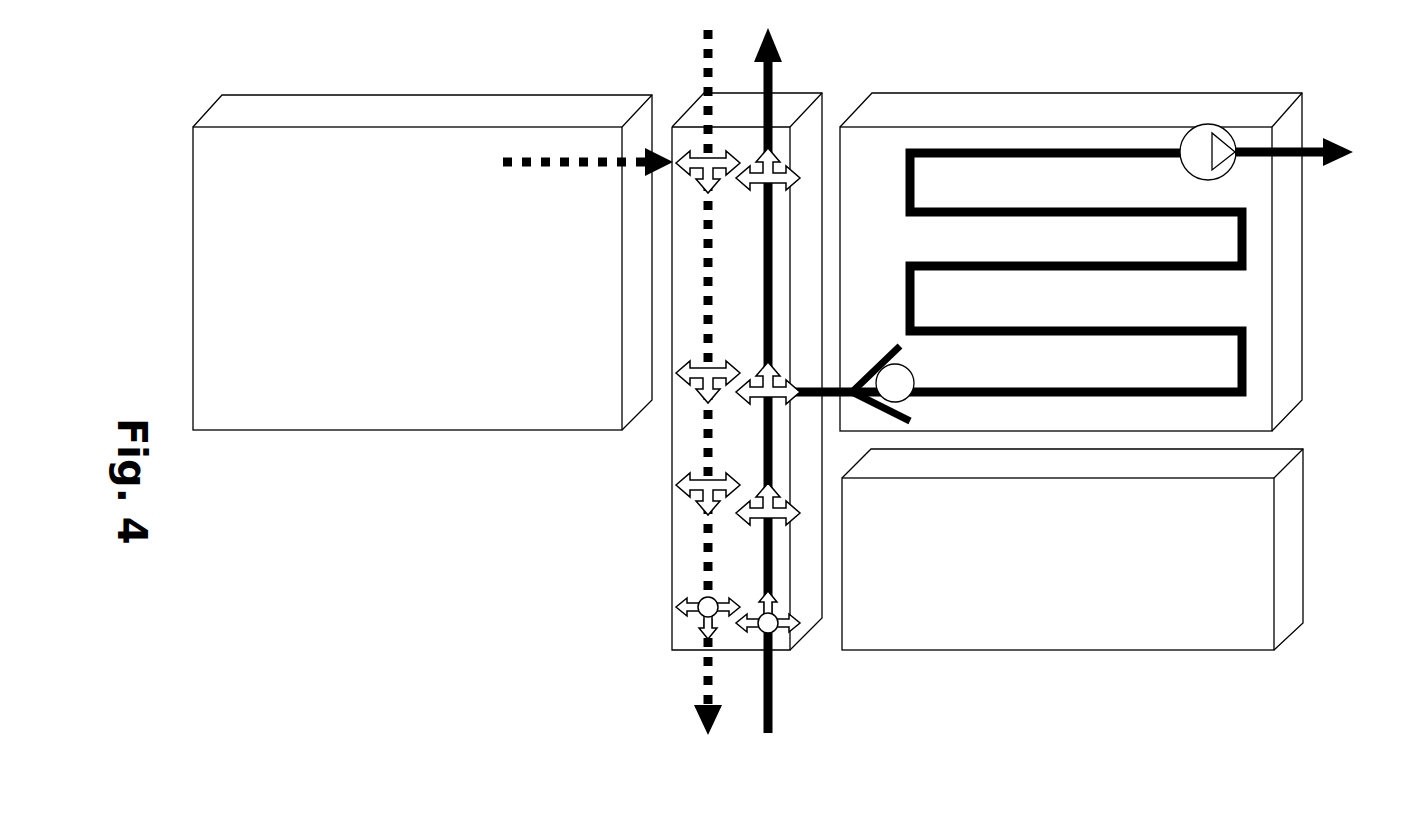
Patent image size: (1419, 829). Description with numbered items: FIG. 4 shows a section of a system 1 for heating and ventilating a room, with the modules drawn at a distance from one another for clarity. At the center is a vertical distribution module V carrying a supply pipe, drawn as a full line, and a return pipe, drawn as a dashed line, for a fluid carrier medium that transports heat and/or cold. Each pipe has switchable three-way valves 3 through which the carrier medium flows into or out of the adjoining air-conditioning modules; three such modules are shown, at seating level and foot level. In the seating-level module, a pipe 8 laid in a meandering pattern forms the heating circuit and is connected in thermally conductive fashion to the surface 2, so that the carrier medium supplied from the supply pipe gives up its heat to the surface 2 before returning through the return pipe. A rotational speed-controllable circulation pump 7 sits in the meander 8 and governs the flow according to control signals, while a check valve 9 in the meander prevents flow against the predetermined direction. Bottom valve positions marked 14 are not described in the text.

The system 1 is at (229, 519).
The surface 2 is at (597, 412).
The three-way valves 3 is at (773, 167).
The circulation pump 7 is at (1220, 170).
The pipe in a meandering pattern 8 is at (1244, 392).
The check valve 9 is at (893, 395).
The pump 14 is at (700, 612).
The distribution module V is at (684, 638).